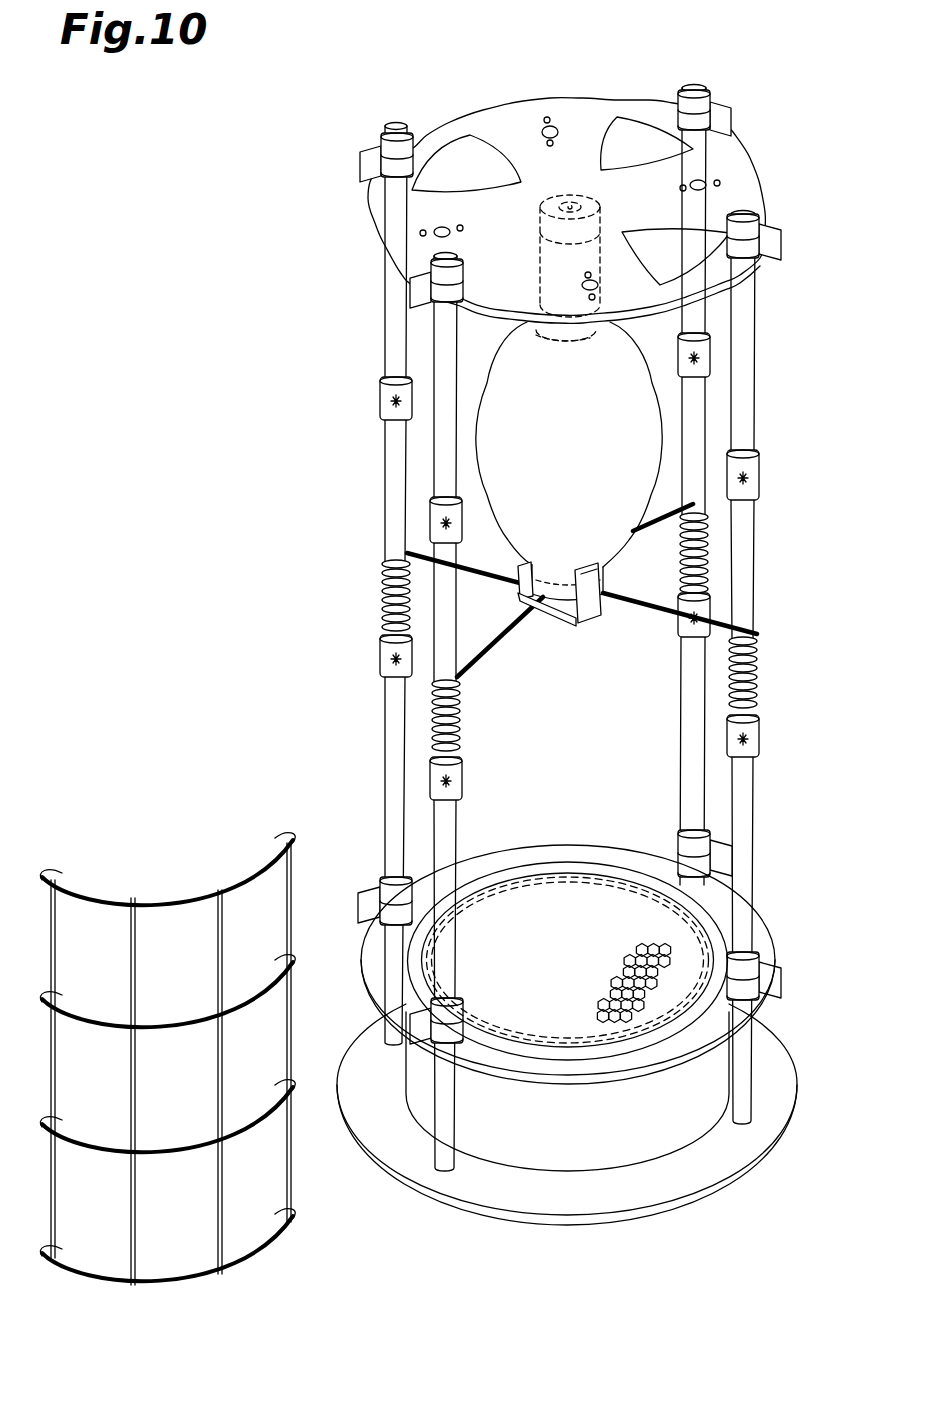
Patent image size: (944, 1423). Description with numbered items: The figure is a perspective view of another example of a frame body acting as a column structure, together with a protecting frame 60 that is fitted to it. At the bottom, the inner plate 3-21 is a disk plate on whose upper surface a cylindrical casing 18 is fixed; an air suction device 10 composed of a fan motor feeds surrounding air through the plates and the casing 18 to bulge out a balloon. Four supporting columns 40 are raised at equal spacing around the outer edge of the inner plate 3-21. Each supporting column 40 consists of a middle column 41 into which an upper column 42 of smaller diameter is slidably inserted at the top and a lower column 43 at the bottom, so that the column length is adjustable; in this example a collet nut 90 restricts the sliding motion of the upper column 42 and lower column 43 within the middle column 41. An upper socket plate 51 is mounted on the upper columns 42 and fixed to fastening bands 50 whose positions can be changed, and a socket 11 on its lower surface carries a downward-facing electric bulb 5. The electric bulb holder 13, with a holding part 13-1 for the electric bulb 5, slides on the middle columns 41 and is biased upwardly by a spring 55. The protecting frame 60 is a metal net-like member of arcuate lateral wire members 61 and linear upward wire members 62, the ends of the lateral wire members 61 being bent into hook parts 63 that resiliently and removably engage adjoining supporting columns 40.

The electric bulb 5 is at (650, 425).
The air suction device 10 is at (602, 1153).
The socket 11 is at (600, 253).
The electric bulb holder 13 is at (615, 613).
The holding part 13-1 is at (572, 604).
The cylindrical casing 18 is at (680, 1115).
The inner plate 3-21 is at (477, 1183).
The supporting column 40 is at (382, 712).
The middle column 41 is at (388, 487).
The upper column 42 is at (395, 345).
The lower column 43 is at (390, 790).
The fastening band 50 is at (705, 120).
The upper socket plate 51 is at (530, 115).
The spring 55 is at (385, 592).
The protecting frame 60 is at (157, 862).
The lateral wire member 61 is at (165, 1025).
The upward wire member 62 is at (130, 1072).
The hook part 63 is at (50, 873).
The collet nut 90 is at (706, 352).